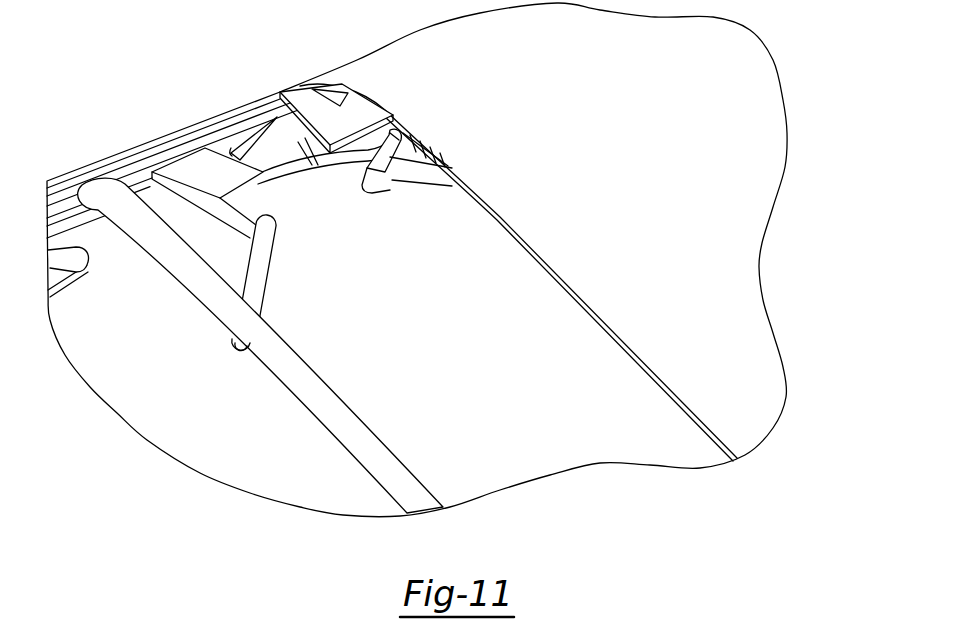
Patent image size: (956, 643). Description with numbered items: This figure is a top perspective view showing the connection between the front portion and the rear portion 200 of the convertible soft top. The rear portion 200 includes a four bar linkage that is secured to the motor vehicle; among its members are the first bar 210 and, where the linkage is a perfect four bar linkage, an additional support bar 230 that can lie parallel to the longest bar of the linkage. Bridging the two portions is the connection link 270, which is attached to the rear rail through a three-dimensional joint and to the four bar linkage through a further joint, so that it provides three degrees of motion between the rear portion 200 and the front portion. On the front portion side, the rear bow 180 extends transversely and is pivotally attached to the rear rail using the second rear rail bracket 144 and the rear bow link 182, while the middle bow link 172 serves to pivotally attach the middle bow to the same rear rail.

The second rear rail bracket 144 is at (205, 180).
The connection link 270 is at (331, 166).
The additional support bar 230 is at (387, 194).
The first bar 210 is at (447, 181).
The rear portion 200 is at (646, 195).
The middle bow link 172 is at (78, 275).
The rear bow link 182 is at (260, 272).
The rear bow 180 is at (300, 380).